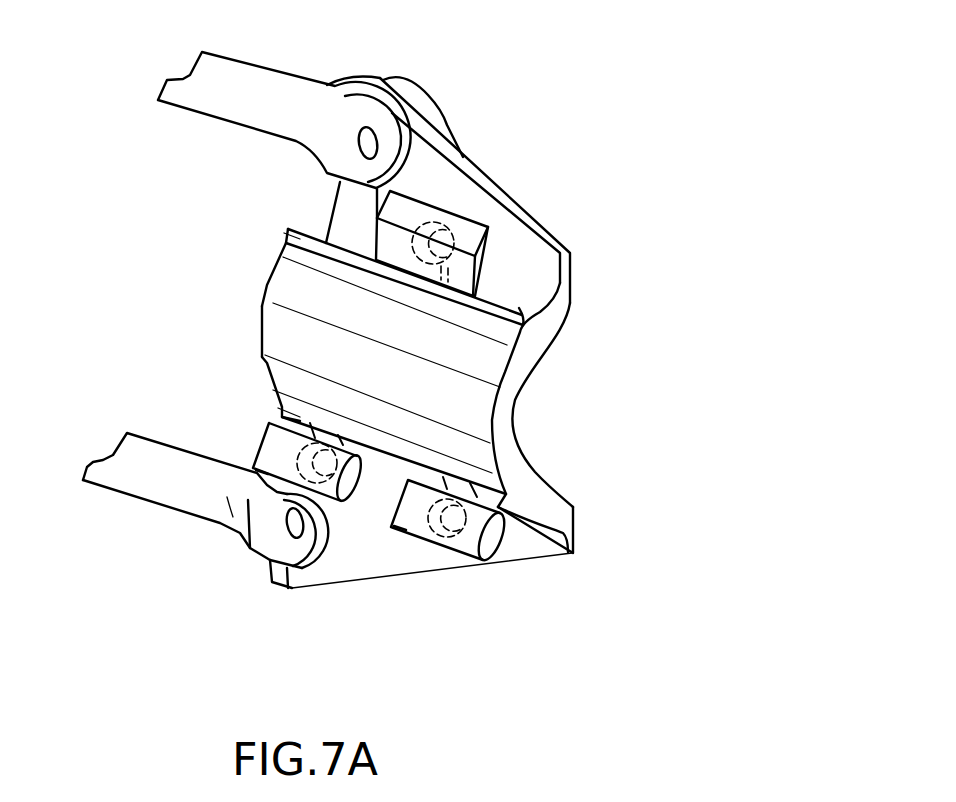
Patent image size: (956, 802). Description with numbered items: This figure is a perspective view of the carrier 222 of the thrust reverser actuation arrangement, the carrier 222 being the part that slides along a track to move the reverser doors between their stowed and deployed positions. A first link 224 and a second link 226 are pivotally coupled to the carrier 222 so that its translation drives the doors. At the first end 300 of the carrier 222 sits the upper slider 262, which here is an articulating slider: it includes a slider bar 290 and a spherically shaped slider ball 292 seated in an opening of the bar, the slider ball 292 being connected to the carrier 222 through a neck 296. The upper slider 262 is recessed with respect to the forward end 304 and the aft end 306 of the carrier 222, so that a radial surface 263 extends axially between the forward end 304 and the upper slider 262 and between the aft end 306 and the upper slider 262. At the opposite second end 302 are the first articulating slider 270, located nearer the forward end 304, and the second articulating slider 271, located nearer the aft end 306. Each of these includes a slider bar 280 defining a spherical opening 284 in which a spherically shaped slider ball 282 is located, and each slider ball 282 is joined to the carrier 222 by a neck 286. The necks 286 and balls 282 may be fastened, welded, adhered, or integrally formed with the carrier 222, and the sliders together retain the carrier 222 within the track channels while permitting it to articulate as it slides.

The carrier 222 is at (413, 390).
The first link 224 is at (266, 90).
The second link 226 is at (152, 478).
The upper slider 262 is at (482, 163).
The radial surface 263 is at (318, 242).
The first articulating slider 270 is at (467, 665).
The second articulating slider 271 is at (286, 650).
The slider bar 280 is at (258, 472).
The slider ball 282 is at (292, 488).
The spherical opening 284 is at (290, 462).
The neck 286 is at (292, 422).
The slider bar 290 is at (463, 230).
The slider ball 292 is at (443, 230).
The neck 296 is at (398, 232).
The first end 300 is at (503, 302).
The second end 302 is at (548, 556).
The forward end 304 is at (262, 283).
The aft end 306 is at (512, 388).